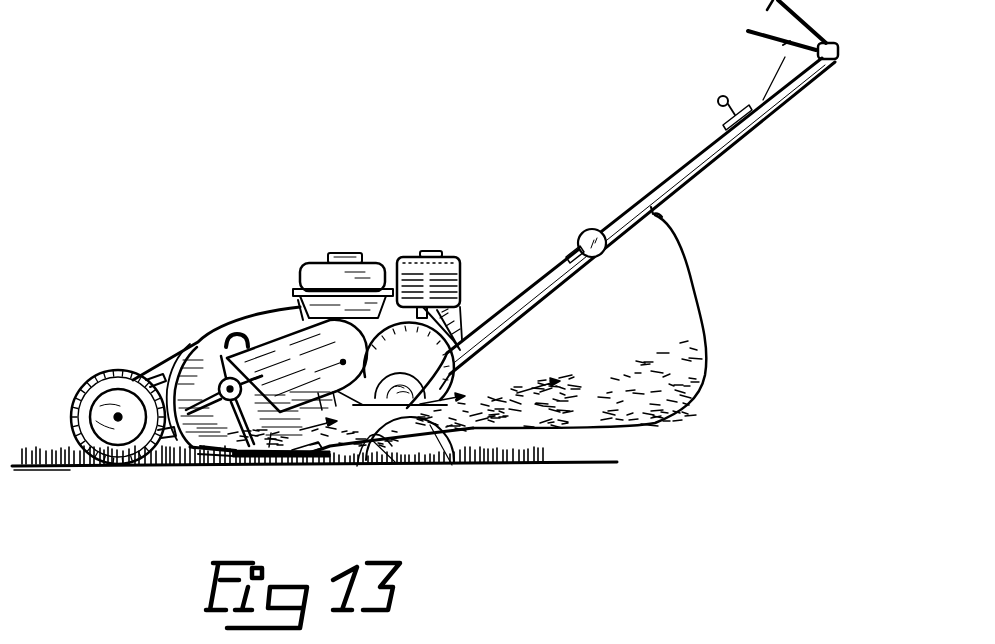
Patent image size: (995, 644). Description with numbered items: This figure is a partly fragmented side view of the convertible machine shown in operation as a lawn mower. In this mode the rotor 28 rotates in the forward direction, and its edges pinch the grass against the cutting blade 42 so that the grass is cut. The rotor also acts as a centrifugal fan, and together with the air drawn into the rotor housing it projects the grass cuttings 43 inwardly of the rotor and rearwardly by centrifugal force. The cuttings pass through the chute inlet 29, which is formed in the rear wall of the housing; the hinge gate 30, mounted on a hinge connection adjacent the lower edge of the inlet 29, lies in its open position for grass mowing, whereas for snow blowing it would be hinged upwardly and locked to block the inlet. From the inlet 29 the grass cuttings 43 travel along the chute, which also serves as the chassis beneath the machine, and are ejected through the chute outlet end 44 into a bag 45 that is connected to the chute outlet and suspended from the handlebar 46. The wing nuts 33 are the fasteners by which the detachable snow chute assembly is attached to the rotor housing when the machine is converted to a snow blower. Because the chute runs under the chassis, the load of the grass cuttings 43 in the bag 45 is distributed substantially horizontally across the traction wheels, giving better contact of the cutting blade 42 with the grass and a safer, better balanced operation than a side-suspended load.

The rotor 28 is at (196, 345).
The chute inlet 29 is at (253, 468).
The hinge gate 30 is at (277, 468).
The wing nuts 33 is at (363, 470).
The cutting blade 42 is at (231, 468).
The grass cuttings 43 is at (303, 467).
The chute outlet end 44 is at (450, 463).
The bag 45 is at (691, 262).
The handlebar 46 is at (668, 177).